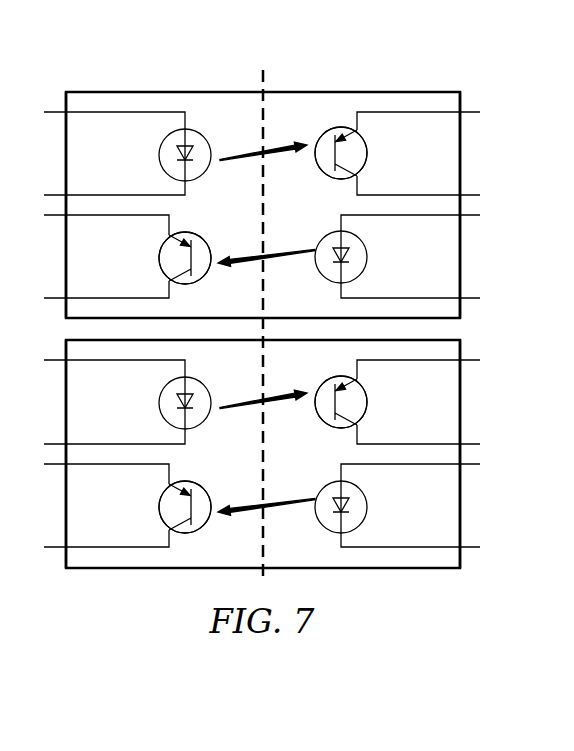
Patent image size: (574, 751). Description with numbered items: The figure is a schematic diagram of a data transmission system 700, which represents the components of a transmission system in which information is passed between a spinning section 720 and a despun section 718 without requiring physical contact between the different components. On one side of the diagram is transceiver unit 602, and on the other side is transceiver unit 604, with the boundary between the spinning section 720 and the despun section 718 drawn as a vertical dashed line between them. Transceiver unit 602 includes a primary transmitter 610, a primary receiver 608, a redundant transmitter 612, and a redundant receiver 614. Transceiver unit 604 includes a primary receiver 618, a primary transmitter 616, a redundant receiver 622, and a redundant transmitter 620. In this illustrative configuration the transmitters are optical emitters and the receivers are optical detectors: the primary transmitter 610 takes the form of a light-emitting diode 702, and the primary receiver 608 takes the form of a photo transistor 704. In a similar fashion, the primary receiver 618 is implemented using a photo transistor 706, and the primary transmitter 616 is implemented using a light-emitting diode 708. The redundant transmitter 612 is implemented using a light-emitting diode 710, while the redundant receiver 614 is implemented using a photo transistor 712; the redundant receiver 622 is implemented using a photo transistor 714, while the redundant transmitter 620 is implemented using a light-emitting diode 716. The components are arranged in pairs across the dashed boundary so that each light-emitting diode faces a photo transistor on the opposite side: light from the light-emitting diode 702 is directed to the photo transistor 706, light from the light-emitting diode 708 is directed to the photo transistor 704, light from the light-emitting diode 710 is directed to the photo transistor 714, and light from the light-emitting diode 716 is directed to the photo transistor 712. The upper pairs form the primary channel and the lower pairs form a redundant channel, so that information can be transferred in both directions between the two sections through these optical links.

The data transmission system 700 is at (168, 68).
The transceiver unit 602 is at (102, 92).
The transceiver unit 604 is at (424, 92).
The spinning section 720 is at (232, 92).
The despun section 718 is at (295, 92).
The light-emitting diode 702 is at (159, 155).
The photo transistor 704 is at (159, 258).
The photo transistor 706 is at (367, 153).
The light-emitting diode 708 is at (367, 257).
The light-emitting diode 710 is at (159, 403).
The photo transistor 712 is at (159, 507).
The photo transistor 714 is at (367, 402).
The light-emitting diode 716 is at (367, 507).
The primary transmitter 610 is at (204, 136).
The primary receiver 618 is at (322, 136).
The primary receiver 608 is at (204, 239).
The primary transmitter 616 is at (323, 239).
The redundant transmitter 612 is at (204, 421).
The redundant receiver 622 is at (322, 420).
The redundant receiver 614 is at (204, 525).
The redundant transmitter 620 is at (322, 525).